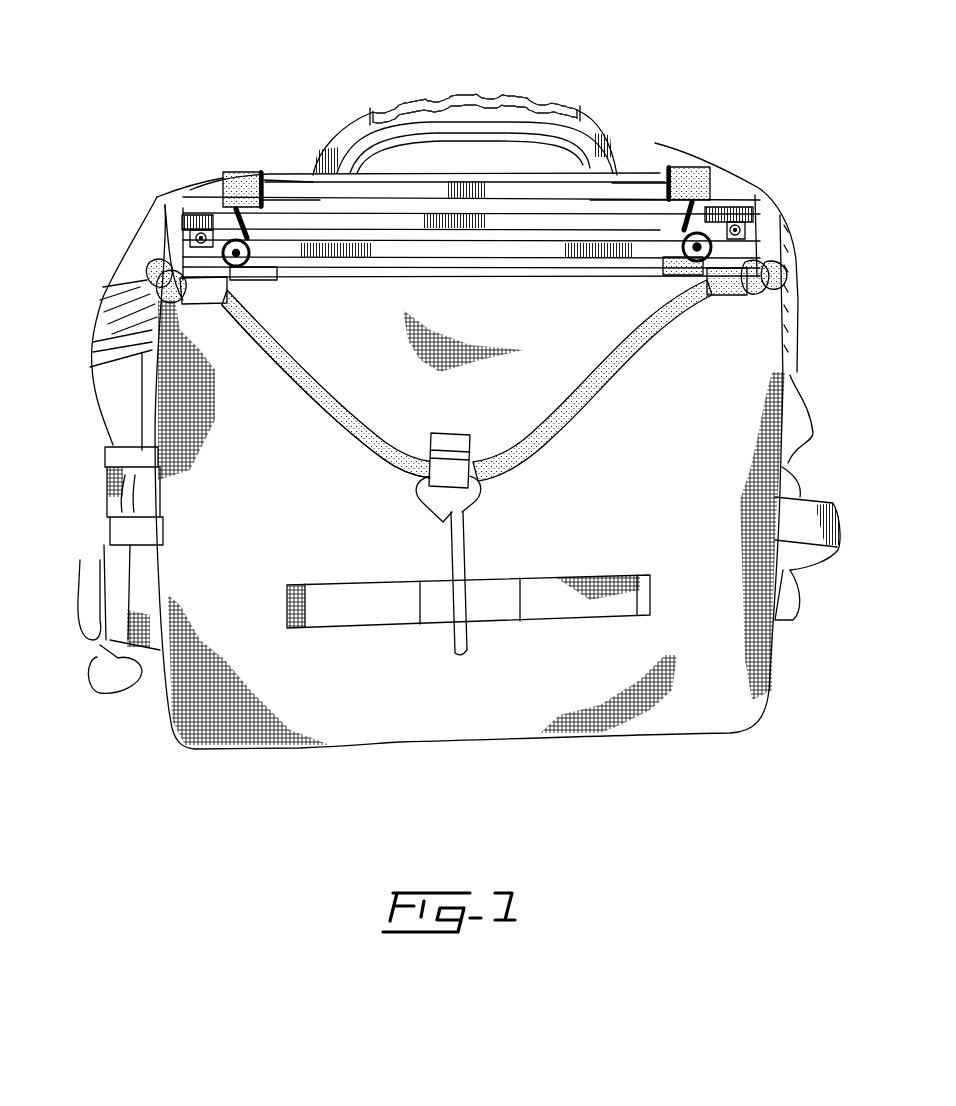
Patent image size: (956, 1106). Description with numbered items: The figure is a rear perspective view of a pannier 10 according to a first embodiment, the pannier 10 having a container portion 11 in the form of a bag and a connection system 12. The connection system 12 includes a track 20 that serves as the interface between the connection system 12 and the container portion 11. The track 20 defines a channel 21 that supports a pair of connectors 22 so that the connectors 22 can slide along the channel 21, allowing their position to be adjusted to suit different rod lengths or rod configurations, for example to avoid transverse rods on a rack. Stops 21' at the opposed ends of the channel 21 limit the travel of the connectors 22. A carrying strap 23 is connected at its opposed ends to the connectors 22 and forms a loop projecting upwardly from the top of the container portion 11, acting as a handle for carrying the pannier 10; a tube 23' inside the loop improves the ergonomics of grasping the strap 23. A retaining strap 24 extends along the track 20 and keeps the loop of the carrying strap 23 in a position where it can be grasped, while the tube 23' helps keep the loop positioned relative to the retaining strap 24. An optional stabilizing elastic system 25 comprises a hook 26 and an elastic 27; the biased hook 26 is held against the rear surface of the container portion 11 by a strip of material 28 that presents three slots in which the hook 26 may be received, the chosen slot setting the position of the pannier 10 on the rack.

The pannier 10 is at (133, 150).
The container portion 11 is at (788, 463).
The connection system 12 is at (180, 206).
The track 20 is at (756, 194).
The channel 21 is at (471, 155).
The stops 21' is at (462, 232).
The connectors 22 is at (236, 172).
The carrying strap 23 is at (485, 110).
The tube 23' is at (475, 74).
The retaining strap 24 is at (353, 190).
The stabilizing elastic system 25 is at (288, 380).
The hook 26 is at (455, 640).
The elastic 27 is at (357, 440).
The strip of material 28 is at (487, 605).